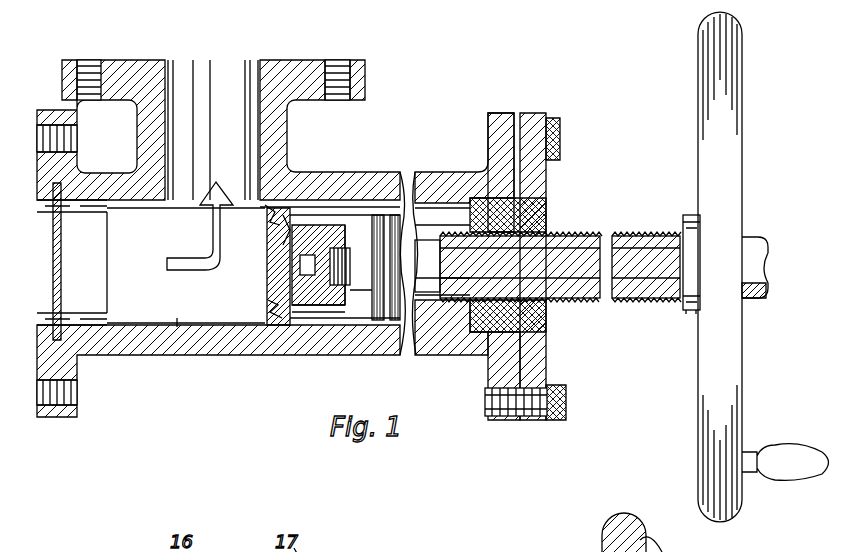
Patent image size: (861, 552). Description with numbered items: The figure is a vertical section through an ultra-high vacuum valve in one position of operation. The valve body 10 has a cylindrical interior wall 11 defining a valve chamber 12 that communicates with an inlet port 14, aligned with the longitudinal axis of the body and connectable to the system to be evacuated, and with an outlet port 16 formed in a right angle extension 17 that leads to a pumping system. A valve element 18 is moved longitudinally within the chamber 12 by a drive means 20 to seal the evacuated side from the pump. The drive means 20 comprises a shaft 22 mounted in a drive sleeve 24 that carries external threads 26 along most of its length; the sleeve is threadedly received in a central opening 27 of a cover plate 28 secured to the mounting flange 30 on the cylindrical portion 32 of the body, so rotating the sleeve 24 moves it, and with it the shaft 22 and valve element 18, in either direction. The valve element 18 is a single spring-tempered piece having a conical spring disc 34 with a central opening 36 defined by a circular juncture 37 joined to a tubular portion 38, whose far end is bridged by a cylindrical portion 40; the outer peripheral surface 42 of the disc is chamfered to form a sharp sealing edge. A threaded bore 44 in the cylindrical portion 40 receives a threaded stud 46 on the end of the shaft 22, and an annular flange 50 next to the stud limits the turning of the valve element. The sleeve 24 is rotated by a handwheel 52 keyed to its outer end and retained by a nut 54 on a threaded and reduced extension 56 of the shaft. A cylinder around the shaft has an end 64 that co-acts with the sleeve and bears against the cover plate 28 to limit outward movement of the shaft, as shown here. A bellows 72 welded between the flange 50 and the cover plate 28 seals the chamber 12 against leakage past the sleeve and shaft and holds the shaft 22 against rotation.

The valve body 10 is at (255, 345).
The cylindrical interior wall 11 is at (182, 327).
The valve chamber 12 is at (148, 300).
The inlet port 14 is at (55, 315).
The outlet port 16 is at (170, 75).
The right angle extension 17 is at (125, 70).
The valve element 18 is at (318, 256).
The drive means 20 is at (598, 312).
The shaft 22 is at (585, 237).
The drive sleeve 24 is at (655, 300).
The external threads 26 is at (632, 237).
The central opening 27 is at (535, 237).
The cover plate 28 is at (530, 118).
The mounting flange 30 is at (498, 128).
The cylindrical portion 32 is at (348, 190).
The conical spring disc 34 is at (268, 305).
The central opening 36 is at (268, 242).
The circular juncture 37 is at (285, 220).
The tubular portion 38 is at (300, 268).
The cylindrical portion 40 is at (313, 311).
The outer peripheral surface 42 is at (268, 210).
The threaded bore 44 is at (344, 273).
The threaded stud 46 is at (355, 246).
The annular flange 50 is at (375, 325).
The handwheel 52 is at (700, 438).
The nut 54 is at (760, 296).
The threaded and reduced extension 56 is at (770, 268).
The end of cylinder 64 is at (435, 235).
The bellows 72 is at (397, 215).